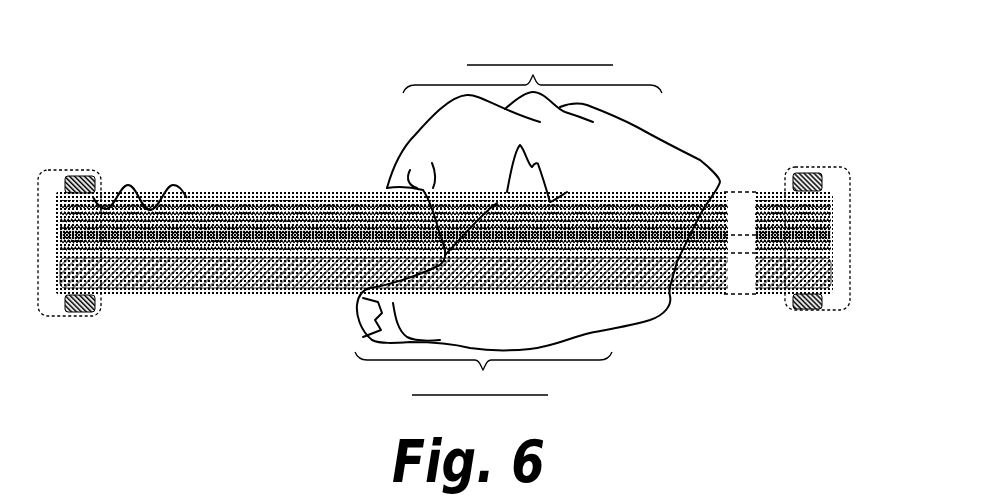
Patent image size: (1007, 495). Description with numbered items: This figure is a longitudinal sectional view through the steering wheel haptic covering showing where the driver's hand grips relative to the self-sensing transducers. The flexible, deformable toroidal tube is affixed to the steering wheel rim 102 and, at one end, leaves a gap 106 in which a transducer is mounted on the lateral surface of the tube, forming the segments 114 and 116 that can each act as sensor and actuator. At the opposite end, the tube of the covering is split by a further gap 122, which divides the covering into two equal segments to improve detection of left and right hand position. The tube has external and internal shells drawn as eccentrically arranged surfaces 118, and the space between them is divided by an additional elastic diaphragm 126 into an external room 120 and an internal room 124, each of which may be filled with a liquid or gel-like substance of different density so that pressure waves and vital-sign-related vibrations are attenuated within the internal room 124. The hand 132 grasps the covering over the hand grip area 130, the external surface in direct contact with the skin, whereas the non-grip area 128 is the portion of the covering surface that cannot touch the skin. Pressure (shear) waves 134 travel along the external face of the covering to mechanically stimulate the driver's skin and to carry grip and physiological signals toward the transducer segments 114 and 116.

The steering wheel rim 102 is at (317, 342).
The gap 106 is at (131, 111).
The segment of self-sensing transducer 114 is at (148, 144).
The segment of self-sensing transducer 116 is at (163, 358).
The surfaces of toroidal tube 118 is at (387, 164).
The external room 120 is at (269, 164).
The gap 122 is at (813, 123).
The internal room 124 is at (238, 342).
The elastic diaphragm 126 is at (351, 137).
The non-grip area 128 is at (689, 394).
The hand grip area 130 is at (719, 72).
The hand 132 is at (719, 157).
The pressure (shear) waves 134 is at (213, 134).